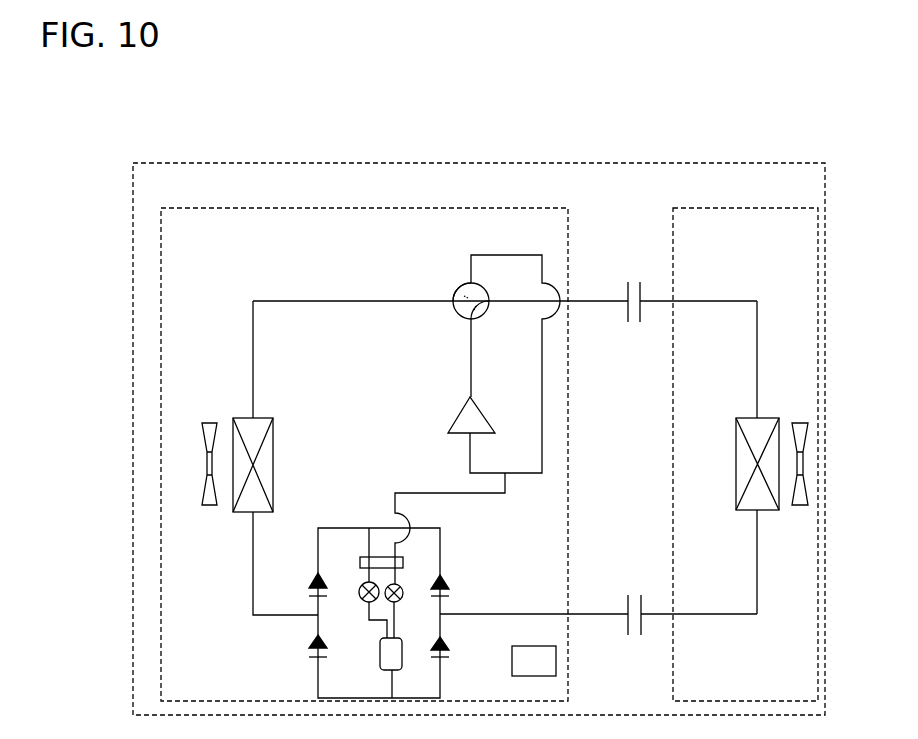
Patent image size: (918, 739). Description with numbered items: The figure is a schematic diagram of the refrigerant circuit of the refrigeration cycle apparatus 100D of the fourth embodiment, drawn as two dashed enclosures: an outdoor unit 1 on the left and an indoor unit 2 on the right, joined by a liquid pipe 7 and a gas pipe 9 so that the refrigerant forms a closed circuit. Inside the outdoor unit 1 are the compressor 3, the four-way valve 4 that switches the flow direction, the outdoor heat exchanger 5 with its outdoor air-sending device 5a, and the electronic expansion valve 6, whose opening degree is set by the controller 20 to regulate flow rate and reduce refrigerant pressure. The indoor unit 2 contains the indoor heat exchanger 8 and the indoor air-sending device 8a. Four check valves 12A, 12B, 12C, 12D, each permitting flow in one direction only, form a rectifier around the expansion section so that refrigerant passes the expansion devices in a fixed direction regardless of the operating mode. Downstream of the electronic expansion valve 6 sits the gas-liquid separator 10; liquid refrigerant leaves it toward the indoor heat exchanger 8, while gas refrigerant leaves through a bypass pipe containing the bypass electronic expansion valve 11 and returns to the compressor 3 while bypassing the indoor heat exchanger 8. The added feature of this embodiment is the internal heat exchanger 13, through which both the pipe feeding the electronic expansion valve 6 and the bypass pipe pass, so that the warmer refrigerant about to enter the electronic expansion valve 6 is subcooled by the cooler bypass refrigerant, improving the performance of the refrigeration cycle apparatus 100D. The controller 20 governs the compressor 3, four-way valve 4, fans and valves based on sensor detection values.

The refrigeration cycle apparatus 100D is at (168, 162).
The outdoor unit 1 is at (352, 207).
The indoor unit 2 is at (723, 208).
The compressor 3 is at (487, 416).
The four-way valve 4 is at (456, 290).
The outdoor heat exchanger 5 is at (276, 462).
The outdoor air-sending device 5a is at (209, 420).
The electronic expansion valve 6 is at (360, 578).
The liquid pipe 7 is at (630, 640).
The indoor heat exchanger 8 is at (736, 466).
The indoor air-sending device 8a is at (797, 507).
The gas pipe 9 is at (630, 280).
The gas-liquid separator 10 is at (378, 655).
The bypass electronic expansion valve 11 is at (403, 582).
The check valve 12A is at (308, 580).
The check valve 12B is at (308, 643).
The check valve 12C is at (449, 580).
The check valve 12D is at (447, 641).
The internal heat exchanger 13 is at (382, 555).
The controller 20 is at (507, 652).